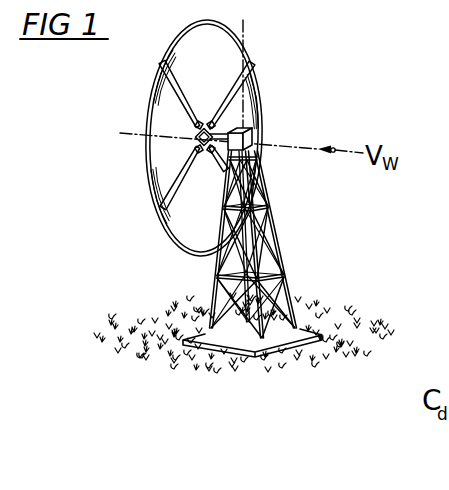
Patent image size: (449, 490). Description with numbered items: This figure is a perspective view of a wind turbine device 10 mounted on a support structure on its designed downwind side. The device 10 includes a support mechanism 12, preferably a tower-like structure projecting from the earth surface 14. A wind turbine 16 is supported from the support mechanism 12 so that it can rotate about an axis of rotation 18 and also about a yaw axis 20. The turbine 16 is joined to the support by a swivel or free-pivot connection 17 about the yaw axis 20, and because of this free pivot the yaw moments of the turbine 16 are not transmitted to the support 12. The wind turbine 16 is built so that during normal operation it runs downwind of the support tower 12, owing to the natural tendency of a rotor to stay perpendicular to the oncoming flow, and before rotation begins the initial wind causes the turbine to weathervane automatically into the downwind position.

The wind turbine device 10 is at (362, 75).
The support mechanism 12 is at (280, 238).
The earth surface 14 is at (315, 313).
The wind turbine 16 is at (157, 206).
The swivel or free-pivot connection 17 is at (254, 136).
The axis of rotation 18 is at (133, 130).
The yaw axis 20 is at (245, 33).